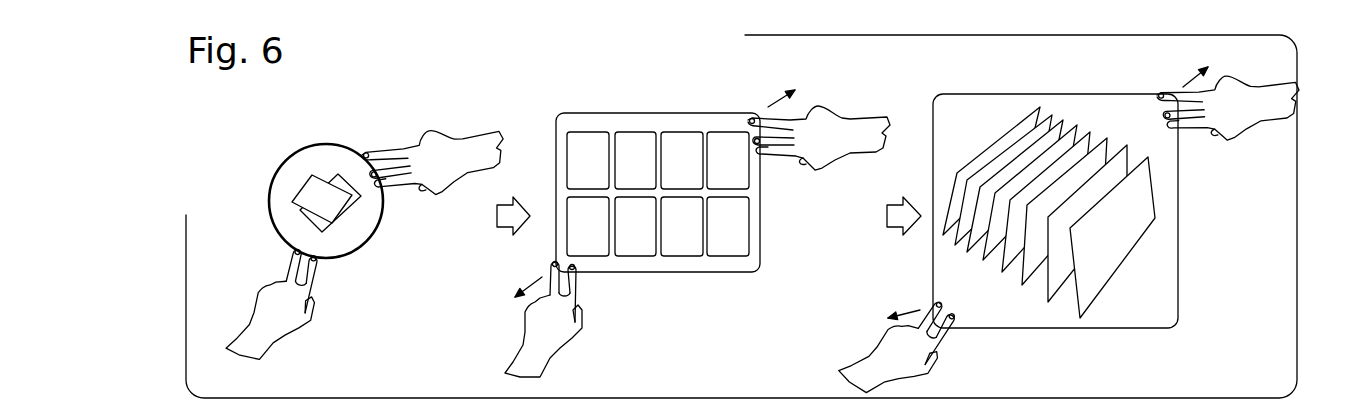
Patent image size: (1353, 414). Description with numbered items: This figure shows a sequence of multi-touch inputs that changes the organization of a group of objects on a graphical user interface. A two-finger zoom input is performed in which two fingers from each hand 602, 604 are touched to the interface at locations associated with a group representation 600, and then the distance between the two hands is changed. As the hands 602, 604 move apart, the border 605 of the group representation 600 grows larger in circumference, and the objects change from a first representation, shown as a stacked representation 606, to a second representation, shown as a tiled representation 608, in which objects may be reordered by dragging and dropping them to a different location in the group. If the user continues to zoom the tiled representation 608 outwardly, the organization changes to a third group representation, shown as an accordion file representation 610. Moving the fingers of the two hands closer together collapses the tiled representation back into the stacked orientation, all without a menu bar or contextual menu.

The group representation 600 is at (356, 125).
The hand 602 is at (430, 145).
The hand 604 is at (260, 297).
The border 605 is at (353, 253).
The stacked representation 606 is at (307, 197).
The tiled representation 608 is at (658, 170).
The accordion file representation 610 is at (1091, 212).